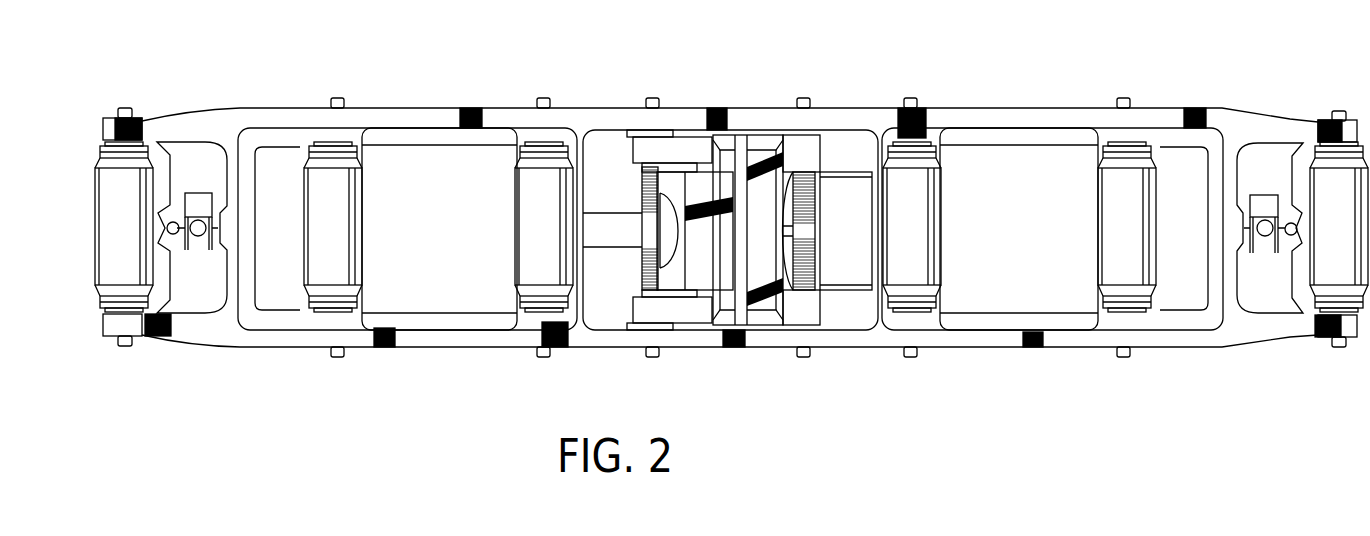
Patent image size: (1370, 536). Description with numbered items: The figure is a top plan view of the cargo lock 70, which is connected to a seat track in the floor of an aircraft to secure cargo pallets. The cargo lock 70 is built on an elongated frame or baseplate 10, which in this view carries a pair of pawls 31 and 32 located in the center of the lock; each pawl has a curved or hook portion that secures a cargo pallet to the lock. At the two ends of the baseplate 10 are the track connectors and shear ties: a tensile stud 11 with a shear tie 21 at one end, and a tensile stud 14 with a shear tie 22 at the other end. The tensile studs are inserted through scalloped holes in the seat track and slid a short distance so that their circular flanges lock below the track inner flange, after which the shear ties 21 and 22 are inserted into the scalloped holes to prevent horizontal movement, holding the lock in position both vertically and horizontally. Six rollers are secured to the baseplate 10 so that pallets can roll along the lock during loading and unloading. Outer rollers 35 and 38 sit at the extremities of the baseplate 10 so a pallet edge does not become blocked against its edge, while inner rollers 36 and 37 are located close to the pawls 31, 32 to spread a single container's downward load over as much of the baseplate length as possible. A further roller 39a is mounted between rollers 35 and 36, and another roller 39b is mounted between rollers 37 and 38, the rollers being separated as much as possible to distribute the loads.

The baseplate 10 is at (886, 348).
The tensile stud 11 is at (173, 235).
The tensile stud 14 is at (1290, 222).
The shear tie 21 is at (200, 237).
The shear tie 22 is at (1265, 240).
The pawl 31 is at (703, 280).
The pawl 32 is at (767, 307).
The outer roller 35 is at (107, 228).
The inner roller 36 is at (527, 228).
The inner roller 37 is at (895, 228).
The outer roller 38 is at (1324, 228).
The roller 39a is at (316, 228).
The roller 39b is at (1106, 228).
The cargo lock 70 is at (1046, 69).